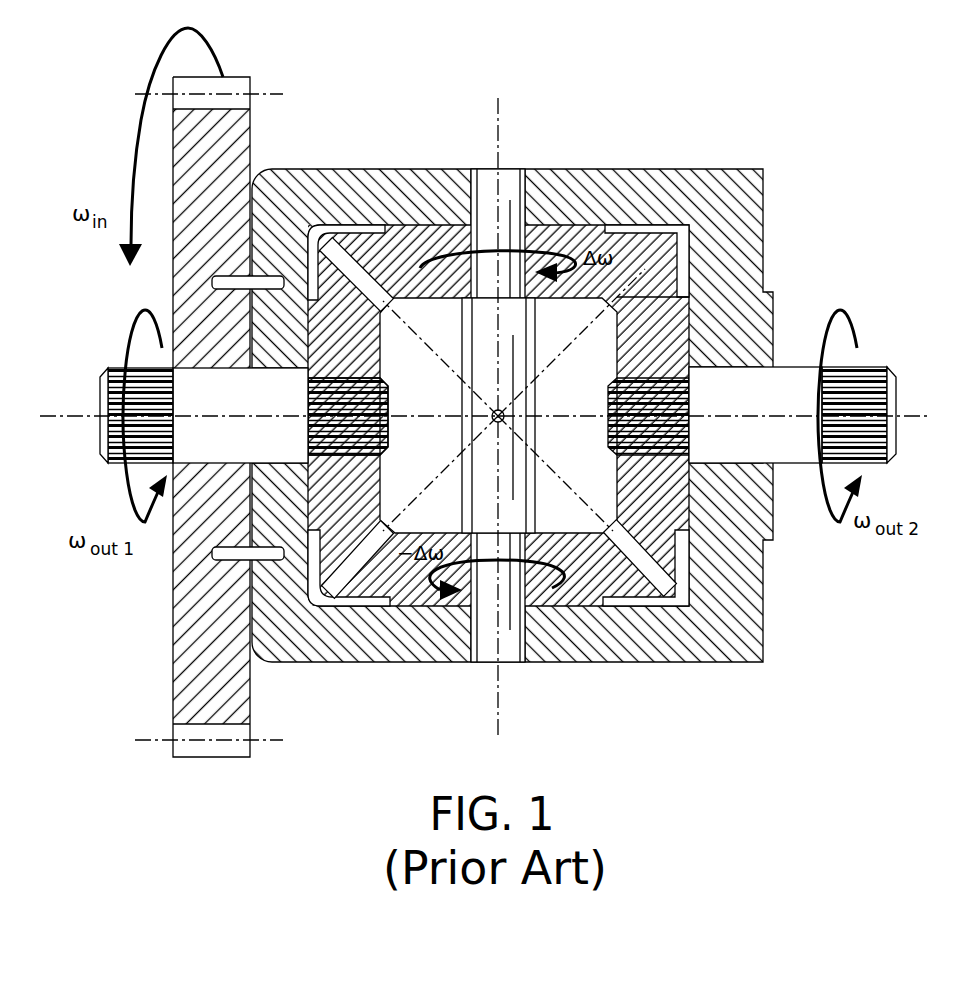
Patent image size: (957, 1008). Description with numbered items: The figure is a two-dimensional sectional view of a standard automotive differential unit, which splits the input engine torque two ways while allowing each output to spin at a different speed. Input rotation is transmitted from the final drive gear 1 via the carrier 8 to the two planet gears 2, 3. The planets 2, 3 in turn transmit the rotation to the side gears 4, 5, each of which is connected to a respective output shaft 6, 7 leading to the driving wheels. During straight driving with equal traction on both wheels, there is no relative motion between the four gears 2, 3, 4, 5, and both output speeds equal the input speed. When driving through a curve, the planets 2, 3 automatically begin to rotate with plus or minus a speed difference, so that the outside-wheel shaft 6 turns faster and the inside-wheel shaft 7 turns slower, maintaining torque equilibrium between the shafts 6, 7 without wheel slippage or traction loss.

The final drive gear 1 is at (238, 127).
The planet gear 2 is at (582, 283).
The planet gear 3 is at (572, 547).
The side gear 4 is at (365, 343).
The side gear 5 is at (627, 342).
The output shaft 6 is at (110, 443).
The output shaft 7 is at (874, 384).
The carrier 8 is at (636, 183).